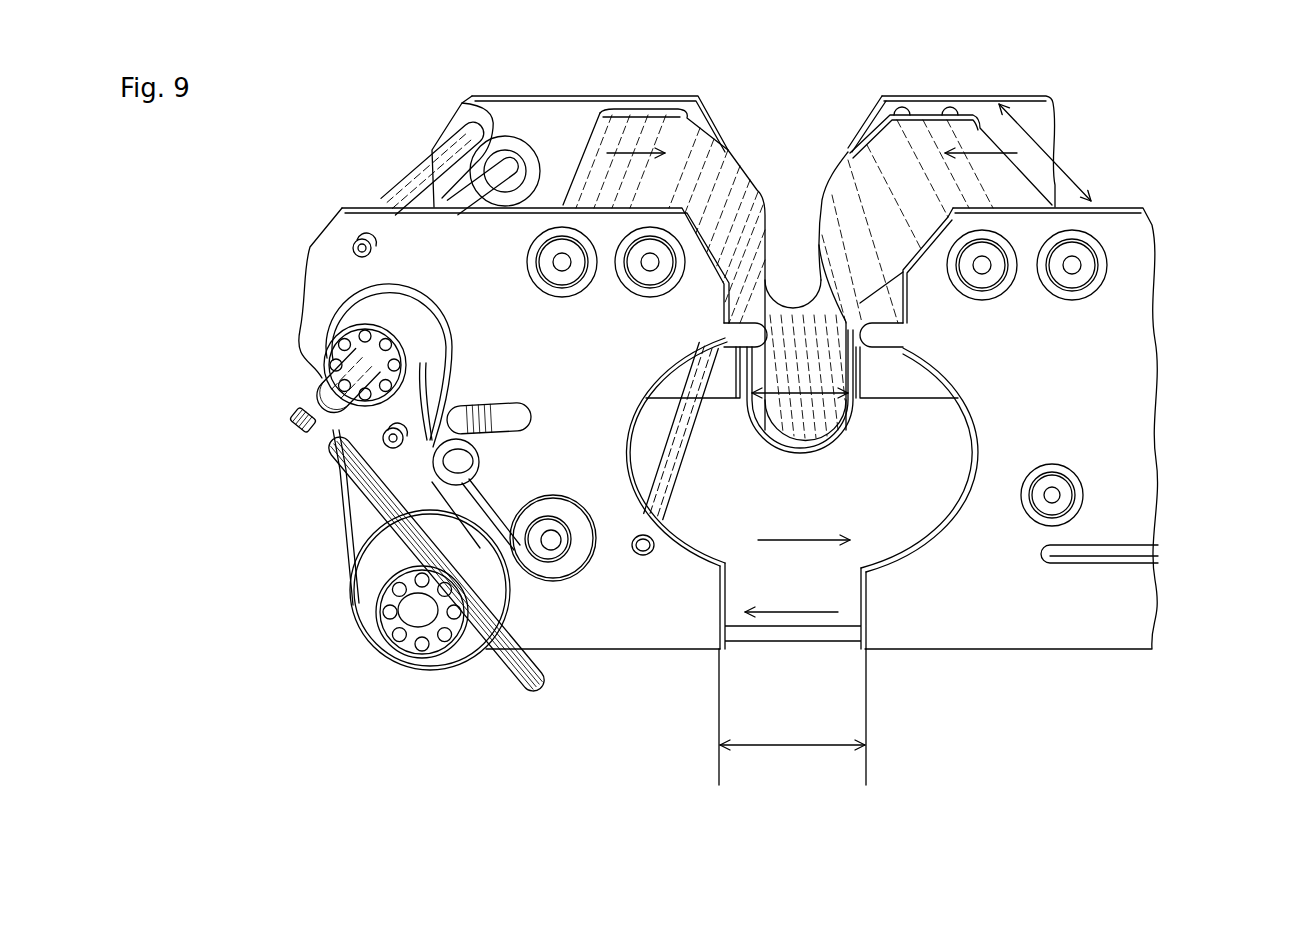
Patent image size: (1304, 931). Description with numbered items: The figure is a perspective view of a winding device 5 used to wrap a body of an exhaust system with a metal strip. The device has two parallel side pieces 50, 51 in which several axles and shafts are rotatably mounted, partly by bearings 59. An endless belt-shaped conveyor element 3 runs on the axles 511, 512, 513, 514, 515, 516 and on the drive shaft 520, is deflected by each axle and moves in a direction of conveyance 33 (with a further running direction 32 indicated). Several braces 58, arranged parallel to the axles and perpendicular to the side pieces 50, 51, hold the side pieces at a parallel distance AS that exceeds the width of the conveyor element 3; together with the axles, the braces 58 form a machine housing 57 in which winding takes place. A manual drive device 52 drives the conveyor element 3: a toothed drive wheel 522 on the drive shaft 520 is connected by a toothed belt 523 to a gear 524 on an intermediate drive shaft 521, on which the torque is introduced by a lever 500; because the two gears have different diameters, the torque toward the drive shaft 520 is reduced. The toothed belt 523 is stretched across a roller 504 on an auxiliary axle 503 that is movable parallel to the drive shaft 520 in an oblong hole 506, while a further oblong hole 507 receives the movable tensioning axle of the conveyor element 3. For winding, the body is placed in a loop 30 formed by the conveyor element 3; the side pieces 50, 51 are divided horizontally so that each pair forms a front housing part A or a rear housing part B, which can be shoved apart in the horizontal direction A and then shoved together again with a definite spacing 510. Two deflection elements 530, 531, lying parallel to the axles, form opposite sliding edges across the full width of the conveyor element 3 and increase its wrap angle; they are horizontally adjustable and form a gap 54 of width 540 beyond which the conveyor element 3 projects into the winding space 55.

The conveyor element 3 is at (757, 188).
The winding device 5 is at (1166, 114).
The loop 30 is at (803, 465).
The first running direction 32 is at (627, 156).
The direction of conveyance 33 is at (985, 157).
The side piece 50 is at (330, 250).
The side piece 51 is at (525, 105).
The manual drive device 52 is at (228, 478).
The gap 54 is at (794, 217).
The winding space 55 is at (798, 428).
The machine housing 57 is at (900, 78).
The brace 58 is at (430, 160).
The bearing 59 is at (514, 165).
The lever 500 is at (333, 483).
The auxiliary axle 503 is at (483, 403).
The roller 504 is at (480, 446).
The oblong hole 506 is at (530, 417).
The oblong hole 507 is at (1148, 553).
The spacing 510 is at (780, 750).
The axle 511 is at (560, 263).
The axle 512 is at (650, 266).
The axle 513 is at (982, 268).
The axle 514 is at (1072, 268).
The axle 515 is at (1053, 495).
The axle 516 is at (553, 541).
The drive shaft 520 is at (420, 613).
The intermediate drive shaft 521 is at (464, 106).
The toothed drive wheel 522 is at (363, 593).
The toothed belt 523 is at (333, 523).
The gear 524 is at (323, 353).
The deflection element 530 is at (725, 353).
The deflection element 531 is at (880, 350).
The width 540 is at (797, 391).
The distance AS is at (1050, 150).
The front housing part A is at (687, 705).
The rear housing part B is at (1007, 707).